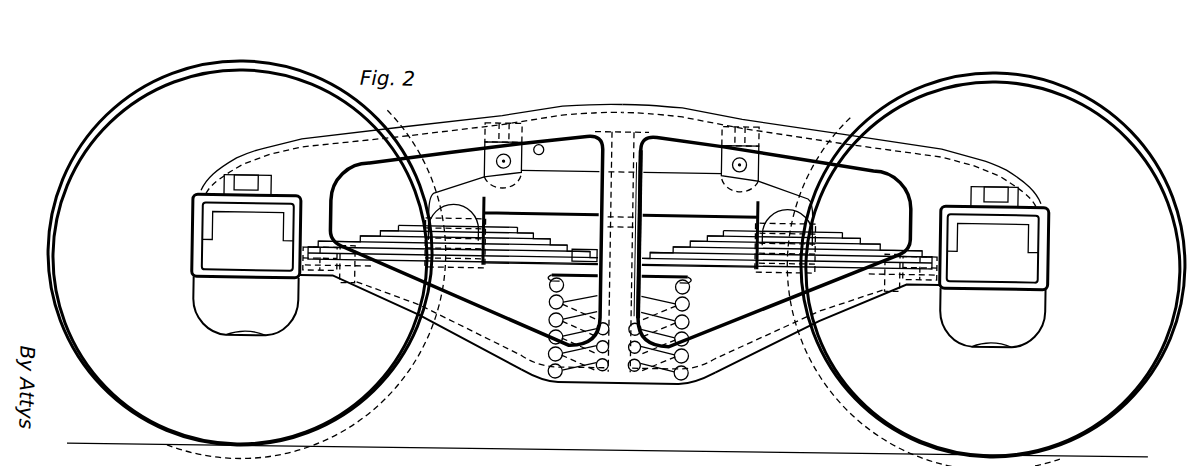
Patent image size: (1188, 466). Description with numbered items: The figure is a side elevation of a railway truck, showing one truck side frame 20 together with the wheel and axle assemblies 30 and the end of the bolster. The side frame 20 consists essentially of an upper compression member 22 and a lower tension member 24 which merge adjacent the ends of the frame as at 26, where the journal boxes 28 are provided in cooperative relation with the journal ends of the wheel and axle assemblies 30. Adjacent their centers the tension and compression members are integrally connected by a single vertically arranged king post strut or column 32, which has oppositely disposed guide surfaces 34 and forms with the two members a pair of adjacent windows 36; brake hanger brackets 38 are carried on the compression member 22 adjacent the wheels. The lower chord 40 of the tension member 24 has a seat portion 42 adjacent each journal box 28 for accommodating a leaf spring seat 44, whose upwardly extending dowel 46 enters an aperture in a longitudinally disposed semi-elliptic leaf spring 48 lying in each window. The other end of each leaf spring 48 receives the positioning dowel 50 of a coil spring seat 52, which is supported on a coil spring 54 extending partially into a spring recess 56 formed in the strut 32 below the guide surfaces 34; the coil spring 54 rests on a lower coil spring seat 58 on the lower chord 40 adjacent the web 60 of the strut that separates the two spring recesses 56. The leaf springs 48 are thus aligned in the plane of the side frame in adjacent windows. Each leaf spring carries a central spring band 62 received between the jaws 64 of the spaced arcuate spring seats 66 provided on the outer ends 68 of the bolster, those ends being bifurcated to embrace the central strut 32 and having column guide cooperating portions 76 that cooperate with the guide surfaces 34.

The truck side frame 20 is at (677, 116).
The compression member 22 is at (815, 137).
The tension member 24 is at (750, 342).
The merged end portions 26 is at (280, 153).
The journal boxes 28 is at (200, 295).
The wheel and axle assemblies 30 is at (95, 158).
The king post strut 32 is at (620, 152).
The guide surfaces 34 is at (644, 168).
The windows 36 is at (538, 146).
The brake hanger brackets 38 is at (487, 163).
The lower chord 40 is at (468, 348).
The seat portion 42 is at (318, 280).
The leaf spring seat 44 is at (353, 287).
The spring seat bracket 46 is at (320, 252).
The semi-elliptic leaf spring 48 is at (413, 253).
The positioning dowel 50 is at (583, 252).
The coil spring seat 52 is at (550, 275).
The coil spring 54 is at (557, 316).
The spring recess 56 is at (630, 242).
The coil spring seat 58 is at (583, 381).
The web 60 is at (620, 371).
The central spring band 62 is at (466, 273).
The jaws 64 is at (470, 225).
The arcuate spring seats 66 is at (768, 237).
The outer ends of the bolster 68 is at (695, 172).
The column guide cooperating portions 76 is at (647, 192).